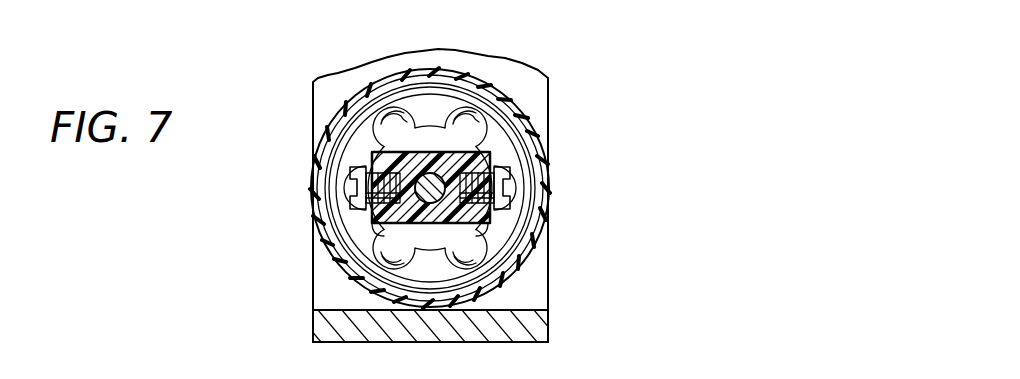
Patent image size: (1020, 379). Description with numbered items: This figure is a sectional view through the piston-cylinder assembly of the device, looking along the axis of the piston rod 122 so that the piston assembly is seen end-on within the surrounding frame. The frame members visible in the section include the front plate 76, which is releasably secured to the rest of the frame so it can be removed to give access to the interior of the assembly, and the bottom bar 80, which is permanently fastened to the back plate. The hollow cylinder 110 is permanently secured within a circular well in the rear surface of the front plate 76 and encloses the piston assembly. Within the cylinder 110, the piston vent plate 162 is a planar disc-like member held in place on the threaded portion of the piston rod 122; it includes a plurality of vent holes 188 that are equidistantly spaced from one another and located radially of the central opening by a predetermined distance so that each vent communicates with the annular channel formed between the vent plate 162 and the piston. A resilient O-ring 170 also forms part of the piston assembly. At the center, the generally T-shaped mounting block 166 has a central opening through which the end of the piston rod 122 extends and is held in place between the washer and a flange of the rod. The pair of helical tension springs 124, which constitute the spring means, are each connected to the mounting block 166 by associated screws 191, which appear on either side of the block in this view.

The front plate 76 is at (552, 96).
The bottom bar 80 is at (545, 323).
The hollow cylinder 110 is at (552, 130).
The piston rod 122 is at (380, 245).
The helical tension springs 124 is at (375, 225).
The piston vent plate 162 is at (447, 97).
The mounting T-block 166 is at (455, 227).
The resilient O-ring 170 is at (470, 133).
The vent holes 188 is at (540, 108).
The screws 191 is at (352, 172).